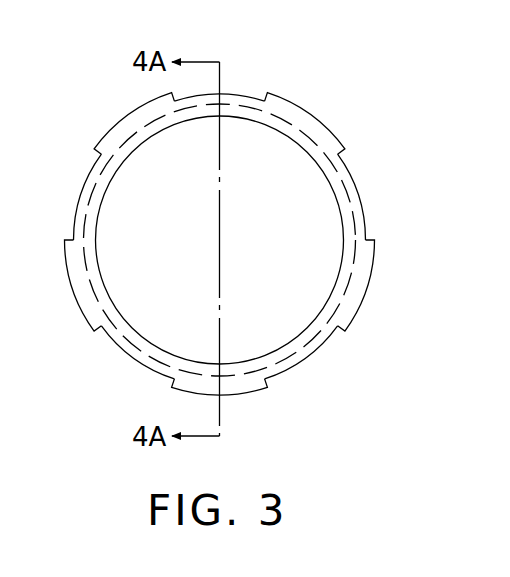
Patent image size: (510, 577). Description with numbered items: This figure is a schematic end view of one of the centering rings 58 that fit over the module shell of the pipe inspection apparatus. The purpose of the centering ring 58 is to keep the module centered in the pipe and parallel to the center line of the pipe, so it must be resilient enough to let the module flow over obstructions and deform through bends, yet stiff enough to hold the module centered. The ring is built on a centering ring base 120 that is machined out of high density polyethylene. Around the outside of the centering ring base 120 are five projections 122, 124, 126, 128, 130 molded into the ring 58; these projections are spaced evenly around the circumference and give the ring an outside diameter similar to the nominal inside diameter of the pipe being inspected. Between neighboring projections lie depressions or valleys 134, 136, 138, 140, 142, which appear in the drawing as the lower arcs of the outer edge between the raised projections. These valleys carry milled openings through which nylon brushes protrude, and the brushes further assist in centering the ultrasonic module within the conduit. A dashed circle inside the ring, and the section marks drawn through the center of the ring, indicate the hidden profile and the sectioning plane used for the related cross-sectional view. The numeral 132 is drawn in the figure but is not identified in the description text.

The centering ring 58 is at (307, 373).
The centering ring base 120 is at (245, 243).
The projection 122 is at (336, 128).
The projection 124 is at (369, 283).
The projection 126 is at (255, 394).
The projection 128 is at (86, 322).
The projection 130 is at (103, 131).
The groove 132 is at (296, 128).
The depression 134 is at (349, 172).
The depression 136 is at (311, 351).
The depression 138 is at (144, 364).
The depression 140 is at (80, 198).
The depression 142 is at (234, 93).